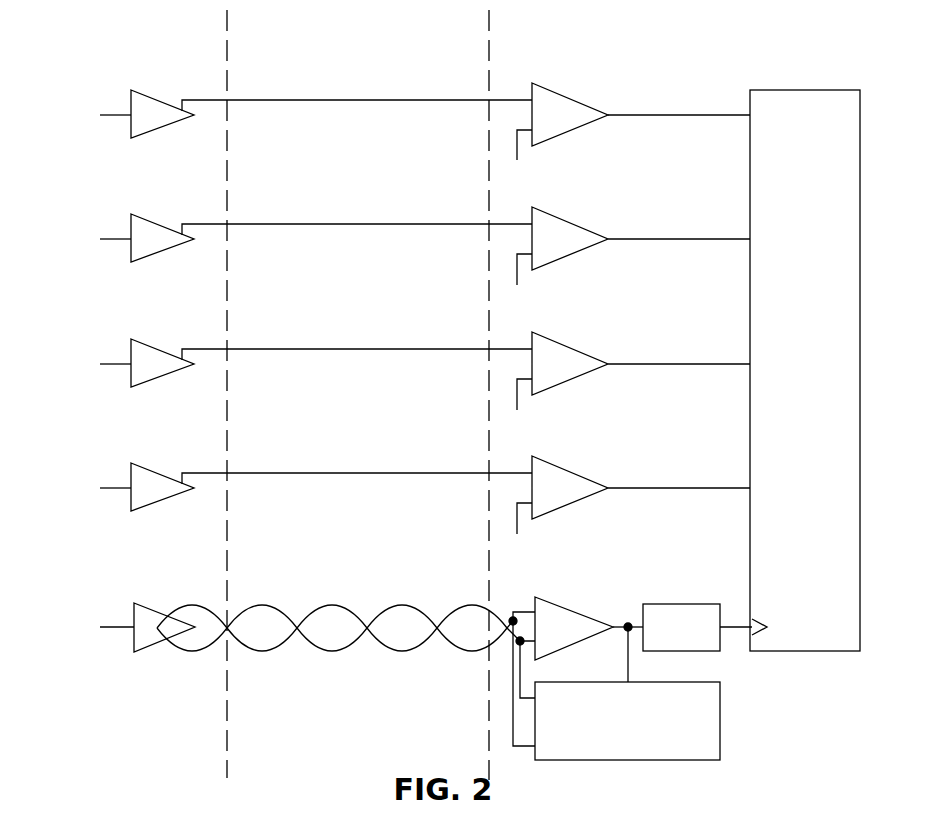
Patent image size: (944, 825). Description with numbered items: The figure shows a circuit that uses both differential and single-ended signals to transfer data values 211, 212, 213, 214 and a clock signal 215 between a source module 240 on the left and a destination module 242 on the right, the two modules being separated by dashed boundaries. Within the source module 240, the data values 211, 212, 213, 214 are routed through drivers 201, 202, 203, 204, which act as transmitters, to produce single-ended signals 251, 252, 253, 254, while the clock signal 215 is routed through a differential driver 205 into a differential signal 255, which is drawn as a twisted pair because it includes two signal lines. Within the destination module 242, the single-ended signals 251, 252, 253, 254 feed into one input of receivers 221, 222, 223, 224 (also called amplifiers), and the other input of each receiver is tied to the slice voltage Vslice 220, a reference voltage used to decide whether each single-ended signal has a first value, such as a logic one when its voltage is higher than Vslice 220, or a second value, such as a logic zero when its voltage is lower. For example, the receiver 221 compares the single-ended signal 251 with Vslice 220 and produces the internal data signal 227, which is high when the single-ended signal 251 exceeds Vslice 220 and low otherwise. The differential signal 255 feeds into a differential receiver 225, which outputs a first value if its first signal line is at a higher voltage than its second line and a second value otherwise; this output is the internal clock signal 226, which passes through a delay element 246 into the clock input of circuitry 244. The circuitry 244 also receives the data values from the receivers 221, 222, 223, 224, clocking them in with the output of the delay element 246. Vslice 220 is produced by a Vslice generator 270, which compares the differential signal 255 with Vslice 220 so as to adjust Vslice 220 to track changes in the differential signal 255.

The source module 240 is at (138, 394).
The destination module 242 is at (656, 395).
The circuitry 244 is at (805, 370).
The data value 211 is at (91, 113).
The data value 212 is at (91, 237).
The data value 213 is at (91, 362).
The data value 214 is at (91, 486).
The clock signal 215 is at (84, 629).
The driver 201 is at (162, 114).
The driver 202 is at (162, 238).
The driver 203 is at (162, 363).
The driver 204 is at (162, 487).
The differential driver 205 is at (164, 627).
The single-ended signal 251 is at (357, 91).
The single-ended signal 252 is at (357, 215).
The single-ended signal 253 is at (357, 340).
The single-ended signal 254 is at (357, 464).
The differential signal 255 is at (346, 609).
The receiver 221 is at (570, 114).
The receiver 222 is at (641, 238).
The receiver 223 is at (641, 363).
The receiver 224 is at (641, 487).
The differential receiver 225 is at (574, 628).
The Vslice 220 is at (618, 777).
The internal data signal 227 is at (672, 113).
The internal clock signal 226 is at (621, 617).
The delay element 246 is at (705, 627).
The Vslice generator 270 is at (616, 690).